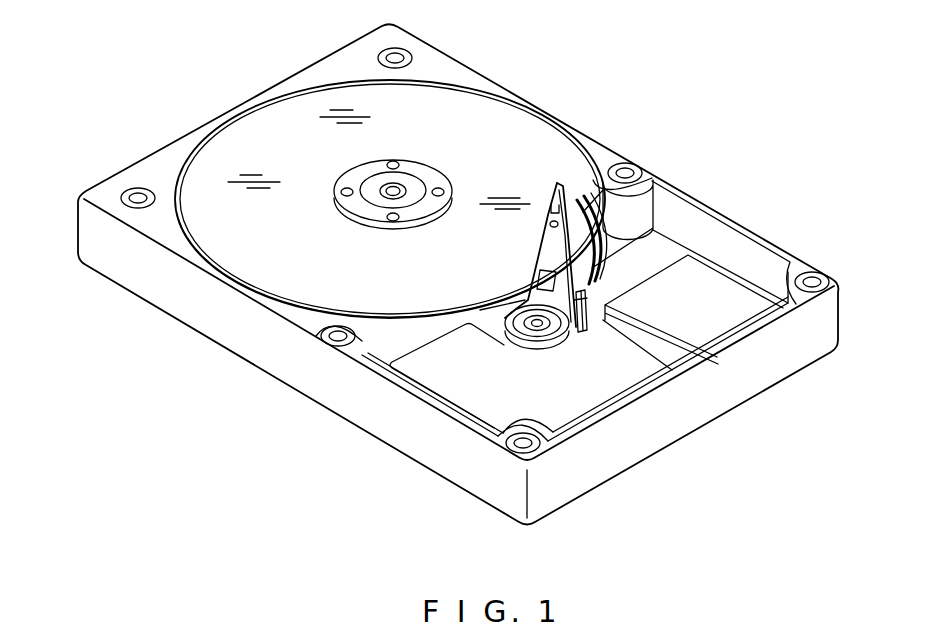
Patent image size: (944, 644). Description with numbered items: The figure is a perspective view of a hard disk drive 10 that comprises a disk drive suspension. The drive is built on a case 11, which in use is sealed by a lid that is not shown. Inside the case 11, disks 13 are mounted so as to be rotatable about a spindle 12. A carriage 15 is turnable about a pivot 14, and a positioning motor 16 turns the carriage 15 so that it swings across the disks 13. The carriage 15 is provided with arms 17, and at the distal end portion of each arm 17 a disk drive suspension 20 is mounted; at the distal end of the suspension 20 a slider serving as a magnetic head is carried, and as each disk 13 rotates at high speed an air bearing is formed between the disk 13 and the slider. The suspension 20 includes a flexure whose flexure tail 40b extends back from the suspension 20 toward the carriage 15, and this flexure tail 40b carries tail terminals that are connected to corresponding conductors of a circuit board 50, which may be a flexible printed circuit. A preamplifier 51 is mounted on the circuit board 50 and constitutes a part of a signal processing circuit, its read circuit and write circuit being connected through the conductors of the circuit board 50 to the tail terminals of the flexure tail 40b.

The hard disk drive 10 is at (732, 96).
The case 11 is at (267, 366).
The spindle 12 is at (405, 182).
The disk 13 is at (500, 127).
The pivot 14 is at (542, 325).
The carriage 15 is at (592, 268).
The positioning motor 16 is at (465, 397).
The arm 17 is at (617, 165).
The disk drive suspension 20 is at (560, 243).
The flexure tail 40b is at (645, 205).
The circuit board 50 is at (582, 321).
The preamplifier 51 is at (585, 312).